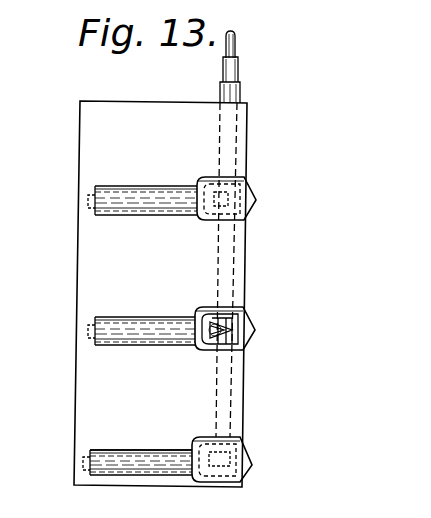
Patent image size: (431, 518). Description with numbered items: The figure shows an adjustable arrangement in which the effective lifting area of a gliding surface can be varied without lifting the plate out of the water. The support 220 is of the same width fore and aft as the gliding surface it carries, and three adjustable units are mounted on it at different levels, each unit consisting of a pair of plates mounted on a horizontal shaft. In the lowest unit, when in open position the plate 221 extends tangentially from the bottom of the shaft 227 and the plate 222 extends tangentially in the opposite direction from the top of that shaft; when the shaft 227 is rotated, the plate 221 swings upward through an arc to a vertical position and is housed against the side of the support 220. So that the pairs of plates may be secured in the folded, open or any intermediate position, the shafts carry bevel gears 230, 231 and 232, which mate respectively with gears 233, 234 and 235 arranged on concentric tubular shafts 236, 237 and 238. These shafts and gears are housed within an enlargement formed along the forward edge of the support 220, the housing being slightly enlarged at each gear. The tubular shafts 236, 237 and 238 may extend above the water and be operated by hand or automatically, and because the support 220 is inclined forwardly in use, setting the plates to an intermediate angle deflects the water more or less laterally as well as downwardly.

The support 220 is at (160, 294).
The plate 221 is at (90, 472).
The plate 222 is at (90, 450).
The horizontal shaft 227 is at (85, 460).
The bevel gear 230 is at (223, 468).
The bevel gear 231 is at (222, 335).
The bevel gear 232 is at (217, 207).
The gear 233 is at (232, 457).
The gear 234 is at (238, 318).
The gear 235 is at (235, 190).
The concentric tubular shaft 236 is at (233, 43).
The concentric tubular shaft 237 is at (236, 70).
The concentric tubular shaft 238 is at (240, 97).